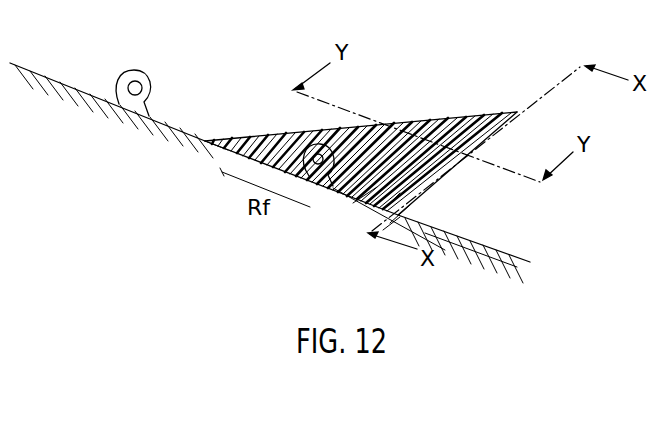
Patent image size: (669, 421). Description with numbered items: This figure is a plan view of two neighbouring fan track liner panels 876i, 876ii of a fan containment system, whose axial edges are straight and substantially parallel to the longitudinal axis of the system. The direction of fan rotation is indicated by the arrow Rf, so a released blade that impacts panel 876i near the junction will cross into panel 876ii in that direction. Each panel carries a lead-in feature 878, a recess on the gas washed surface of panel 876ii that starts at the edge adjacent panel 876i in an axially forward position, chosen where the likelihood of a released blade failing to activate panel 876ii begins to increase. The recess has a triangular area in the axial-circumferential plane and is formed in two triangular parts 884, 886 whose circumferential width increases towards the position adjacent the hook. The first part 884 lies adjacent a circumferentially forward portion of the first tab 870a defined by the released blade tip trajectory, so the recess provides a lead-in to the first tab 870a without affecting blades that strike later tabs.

The fan track liner panel 876ii is at (262, 121).
The fan track liner panel 876i is at (537, 227).
The lead-in feature 878 is at (441, 118).
The first part of the recess 884 is at (408, 190).
The second part of the recess 886 is at (216, 153).
The first tab 870a is at (326, 180).